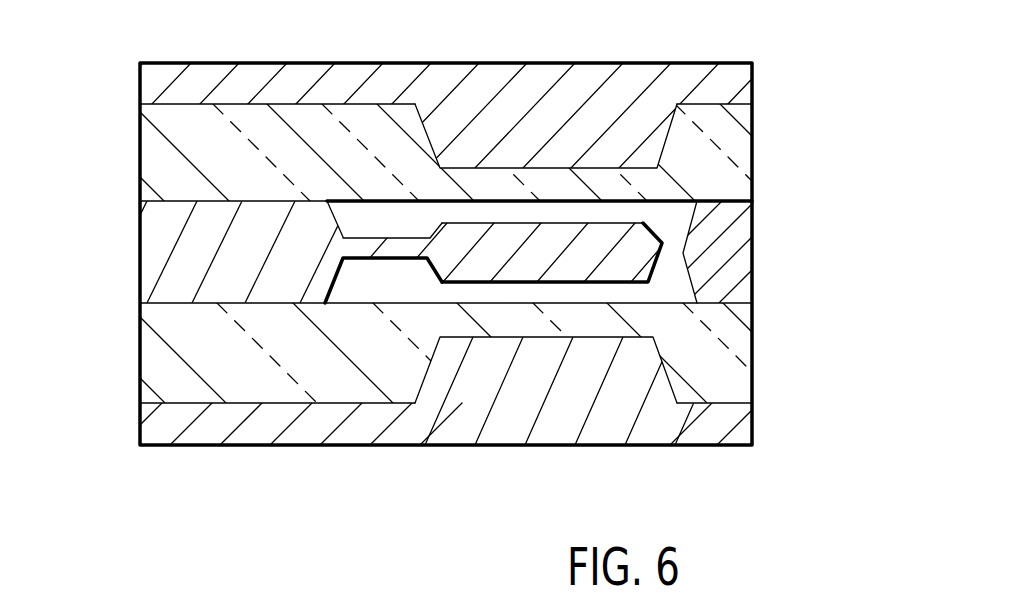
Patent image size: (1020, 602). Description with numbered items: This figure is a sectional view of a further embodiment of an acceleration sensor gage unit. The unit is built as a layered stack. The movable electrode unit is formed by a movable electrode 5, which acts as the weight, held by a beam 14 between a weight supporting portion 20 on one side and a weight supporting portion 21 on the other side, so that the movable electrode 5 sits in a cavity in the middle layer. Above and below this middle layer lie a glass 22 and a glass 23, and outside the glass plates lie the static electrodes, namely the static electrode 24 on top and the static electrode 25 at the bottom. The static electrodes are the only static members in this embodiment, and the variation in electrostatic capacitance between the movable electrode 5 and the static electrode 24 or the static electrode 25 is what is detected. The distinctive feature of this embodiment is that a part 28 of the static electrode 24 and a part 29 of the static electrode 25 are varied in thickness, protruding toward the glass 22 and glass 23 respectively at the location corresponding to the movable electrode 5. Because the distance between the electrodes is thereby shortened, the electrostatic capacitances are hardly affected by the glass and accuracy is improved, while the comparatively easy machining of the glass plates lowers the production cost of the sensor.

The weight supporting portion 20 is at (142, 248).
The static electrode 24 is at (657, 70).
The part of the static electrode 28 is at (448, 138).
The glass 22 is at (737, 187).
The weight supporting portion 21 is at (740, 252).
The beam 14 is at (351, 237).
The movable electrode 5 is at (617, 233).
The glass 23 is at (733, 370).
The static electrode 25 is at (348, 433).
The part of the static electrode 29 is at (582, 350).